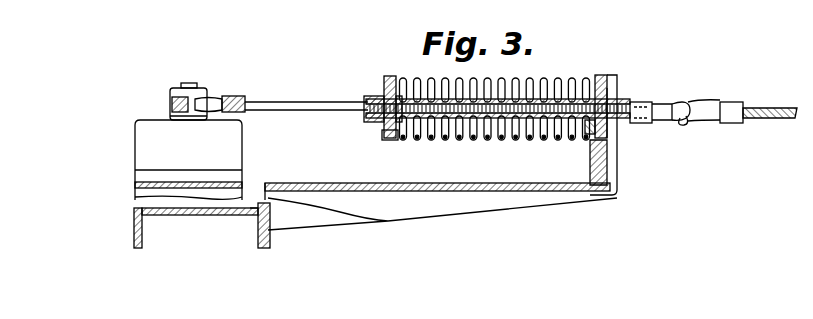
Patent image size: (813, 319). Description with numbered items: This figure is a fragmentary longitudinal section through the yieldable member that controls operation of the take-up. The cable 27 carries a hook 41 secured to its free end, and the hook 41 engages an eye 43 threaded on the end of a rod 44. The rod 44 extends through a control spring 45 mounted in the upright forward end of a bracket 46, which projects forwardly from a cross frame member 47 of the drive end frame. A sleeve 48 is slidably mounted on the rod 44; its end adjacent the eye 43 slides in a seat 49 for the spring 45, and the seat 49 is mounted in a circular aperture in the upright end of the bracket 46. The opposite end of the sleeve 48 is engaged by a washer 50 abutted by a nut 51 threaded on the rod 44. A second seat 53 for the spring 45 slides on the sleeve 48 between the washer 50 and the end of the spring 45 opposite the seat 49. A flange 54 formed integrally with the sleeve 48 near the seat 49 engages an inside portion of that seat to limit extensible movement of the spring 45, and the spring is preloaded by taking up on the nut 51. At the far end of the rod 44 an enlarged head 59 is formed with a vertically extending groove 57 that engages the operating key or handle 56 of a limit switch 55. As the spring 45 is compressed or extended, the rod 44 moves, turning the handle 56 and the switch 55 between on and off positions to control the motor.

The cable 27 is at (774, 107).
The hook 41 is at (732, 101).
The eye 43 is at (658, 102).
The rod 44 is at (290, 108).
The control spring 45 is at (548, 80).
The bracket 46 is at (612, 80).
The cross frame member 47 is at (135, 228).
The sleeve 48 is at (424, 76).
The seat 49 is at (600, 76).
The washer 50 is at (386, 84).
The nut 51 is at (383, 96).
The seat 53 is at (384, 139).
The flange 54 is at (612, 128).
The limit switch 55 is at (140, 160).
The operating key or handle 56 is at (232, 97).
The groove 57 is at (200, 86).
The enlarged head 59 is at (172, 102).